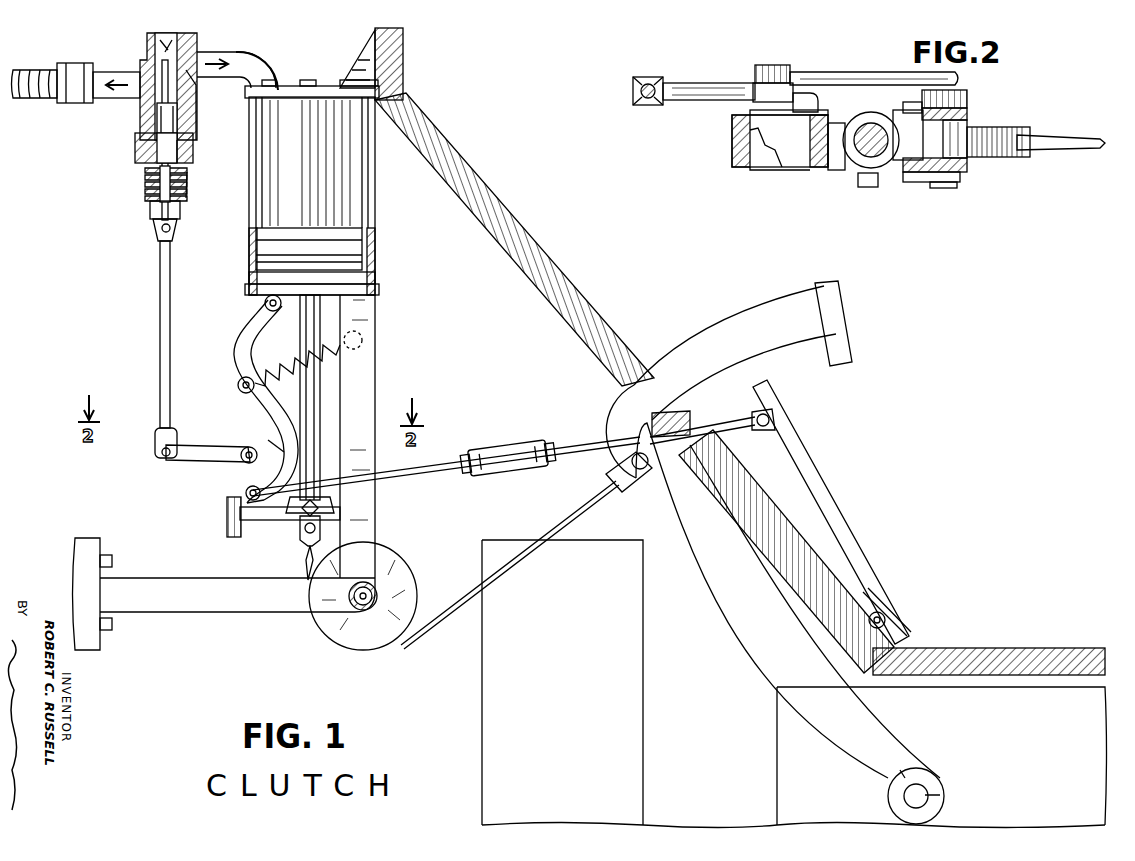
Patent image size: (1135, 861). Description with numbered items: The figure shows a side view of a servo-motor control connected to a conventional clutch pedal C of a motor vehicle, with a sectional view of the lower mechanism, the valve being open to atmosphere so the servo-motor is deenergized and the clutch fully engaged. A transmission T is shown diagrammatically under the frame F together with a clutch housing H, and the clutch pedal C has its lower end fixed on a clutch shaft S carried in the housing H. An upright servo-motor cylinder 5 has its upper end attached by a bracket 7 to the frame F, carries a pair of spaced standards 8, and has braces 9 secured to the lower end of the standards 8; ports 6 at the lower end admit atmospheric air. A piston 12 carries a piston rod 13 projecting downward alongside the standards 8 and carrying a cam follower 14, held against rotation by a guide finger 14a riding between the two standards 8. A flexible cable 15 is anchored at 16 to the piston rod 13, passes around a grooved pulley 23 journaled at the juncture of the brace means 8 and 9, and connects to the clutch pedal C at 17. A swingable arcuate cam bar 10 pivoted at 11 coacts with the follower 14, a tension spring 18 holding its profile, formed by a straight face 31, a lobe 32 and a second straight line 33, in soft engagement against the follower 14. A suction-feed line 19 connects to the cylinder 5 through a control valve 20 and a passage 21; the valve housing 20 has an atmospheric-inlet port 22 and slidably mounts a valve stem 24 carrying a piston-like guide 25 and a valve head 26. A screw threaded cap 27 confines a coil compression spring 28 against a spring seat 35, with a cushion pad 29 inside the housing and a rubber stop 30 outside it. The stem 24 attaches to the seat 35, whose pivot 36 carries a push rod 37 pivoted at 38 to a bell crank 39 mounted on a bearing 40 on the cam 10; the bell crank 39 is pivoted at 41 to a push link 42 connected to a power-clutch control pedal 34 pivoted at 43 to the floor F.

In FIG. 1, the servo-motor cylinder 5 is at (362, 188).
In FIG. 1, the ports 6 is at (378, 278).
In FIG. 1, the bracket 7 is at (404, 62).
In FIG. 1, the standards or brackets 8 is at (378, 368).
In FIG. 2, the standards or brackets 8 is at (967, 108).
In FIG. 1, the braces 9 is at (178, 603).
In FIG. 2, the braces 9 is at (966, 98).
In FIG. 1, the cam means 10 is at (243, 342).
In FIG. 2, the cam means 10 is at (734, 140).
In FIG. 1, the pivot 11 is at (265, 303).
In FIG. 1, the piston 12 is at (345, 258).
In FIG. 1, the piston rod 13 is at (322, 438).
In FIG. 2, the piston rod 13 is at (880, 168).
In FIG. 1, the cam follower 14 is at (282, 522).
In FIG. 2, the cam follower 14 is at (762, 172).
In FIG. 1, the guide finger 14a is at (336, 505).
In FIG. 2, the guide finger 14a is at (903, 104).
In FIG. 1, the flexible cable 15 is at (556, 490).
In FIG. 2, the flexible cable 15 is at (1066, 150).
In FIG. 1, the cable anchor 16 is at (322, 530).
In FIG. 1, the cable connection 17 is at (645, 480).
In FIG. 1, the tension spring 18 is at (280, 365).
In FIG. 1, the suction-feed line 19 is at (28, 100).
In FIG. 1, the motive-fluid control valve 20 is at (198, 90).
In FIG. 1, the nipple passage 21 is at (258, 60).
In FIG. 1, the atmospheric-inlet port 22 is at (148, 47).
In FIG. 1, the grooved pulley 23 is at (356, 640).
In FIG. 2, the grooved pulley 23 is at (1015, 158).
In FIG. 1, the valve stem 24 is at (160, 96).
In FIG. 1, the piston-like guide 25 is at (178, 123).
In FIG. 1, the valve head 26 is at (225, 50).
In FIG. 1, the screw threaded cap 27 is at (136, 148).
In FIG. 1, the coil compression spring 28 is at (144, 176).
In FIG. 1, the cushion pad 29 is at (190, 148).
In FIG. 1, the rubber stop 30 is at (188, 184).
In FIG. 1, the straight face 31 is at (242, 536).
In FIG. 1, the lobe 32 is at (270, 438).
In FIG. 2, the lobe 32 is at (842, 170).
In FIG. 1, the second straight line 33 is at (248, 360).
In FIG. 1, the power-clutch control pedal 34 is at (818, 452).
In FIG. 1, the spring seat 35 is at (150, 212).
In FIG. 1, the pivot 36 is at (160, 230).
In FIG. 1, the push rod 37 is at (160, 317).
In FIG. 2, the push rod 37 is at (645, 105).
In FIG. 1, the pivotal connection 38 is at (162, 456).
In FIG. 1, the bell crank 39 is at (215, 452).
In FIG. 2, the bell crank 39 is at (700, 94).
In FIG. 1, the bearing 40 is at (241, 462).
In FIG. 1, the pivotal connection 41 is at (246, 496).
In FIG. 2, the pivotal connection 41 is at (784, 66).
In FIG. 1, the push link 42 is at (568, 440).
In FIG. 2, the push link 42 is at (846, 72).
In FIG. 1, the pivot 43 is at (890, 615).
In FIG. 1, the clutch pedal C is at (740, 330).
In FIG. 1, the vehicle frame F is at (100, 548).
In FIG. 1, the clutch housing H is at (1010, 690).
In FIG. 1, the transmission T is at (482, 708).
In FIG. 1, the clutch shaft S is at (928, 793).